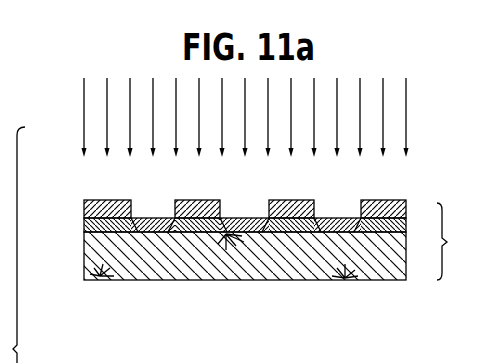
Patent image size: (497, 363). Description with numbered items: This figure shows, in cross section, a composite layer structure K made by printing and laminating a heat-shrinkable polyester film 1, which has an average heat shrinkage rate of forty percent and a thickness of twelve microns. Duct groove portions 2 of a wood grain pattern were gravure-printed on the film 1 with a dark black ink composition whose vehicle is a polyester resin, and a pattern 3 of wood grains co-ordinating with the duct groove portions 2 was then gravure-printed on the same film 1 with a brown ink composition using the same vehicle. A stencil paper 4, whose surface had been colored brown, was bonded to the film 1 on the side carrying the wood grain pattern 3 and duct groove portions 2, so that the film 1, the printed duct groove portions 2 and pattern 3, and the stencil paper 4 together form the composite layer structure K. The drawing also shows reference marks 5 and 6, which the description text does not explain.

The heat-shrinkable polyester film 1 is at (84, 204).
The duct groove portions 2 is at (245, 201).
The pattern of wood grains 3 is at (221, 214).
The stencil paper 4 is at (252, 258).
The irradiation beam 5 is at (360, 120).
The exposed portion of thin film 6 is at (322, 212).
The composite layer structure K is at (452, 241).